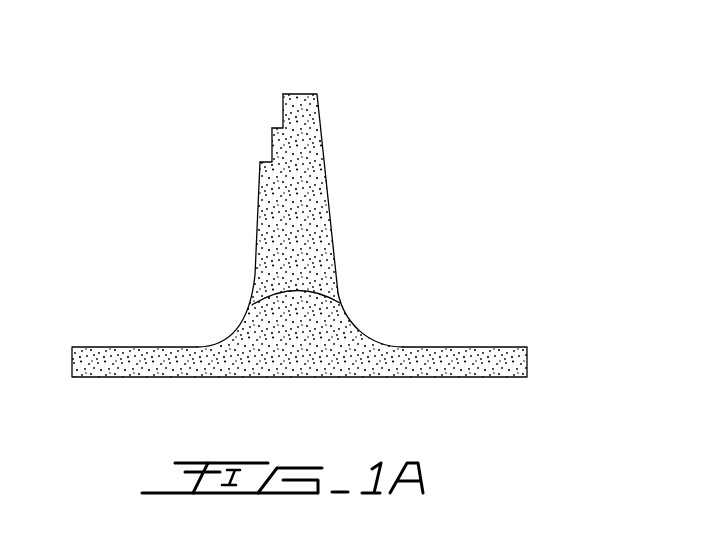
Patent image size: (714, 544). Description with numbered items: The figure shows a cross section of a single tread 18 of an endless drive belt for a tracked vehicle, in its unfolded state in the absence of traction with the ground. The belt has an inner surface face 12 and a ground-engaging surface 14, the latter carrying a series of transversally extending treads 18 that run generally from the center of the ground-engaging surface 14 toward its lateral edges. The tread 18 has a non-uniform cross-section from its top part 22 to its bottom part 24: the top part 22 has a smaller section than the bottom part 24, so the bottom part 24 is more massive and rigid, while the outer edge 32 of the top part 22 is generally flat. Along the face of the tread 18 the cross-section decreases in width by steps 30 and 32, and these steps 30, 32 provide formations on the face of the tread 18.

The inner surface face 12 is at (378, 378).
The ground-engaging surface 14 is at (117, 326).
The tread 18 is at (273, 63).
The top part 22 is at (318, 105).
The bottom part 24 is at (230, 328).
The step 30 is at (266, 161).
The step / outer edge 32 is at (278, 128).